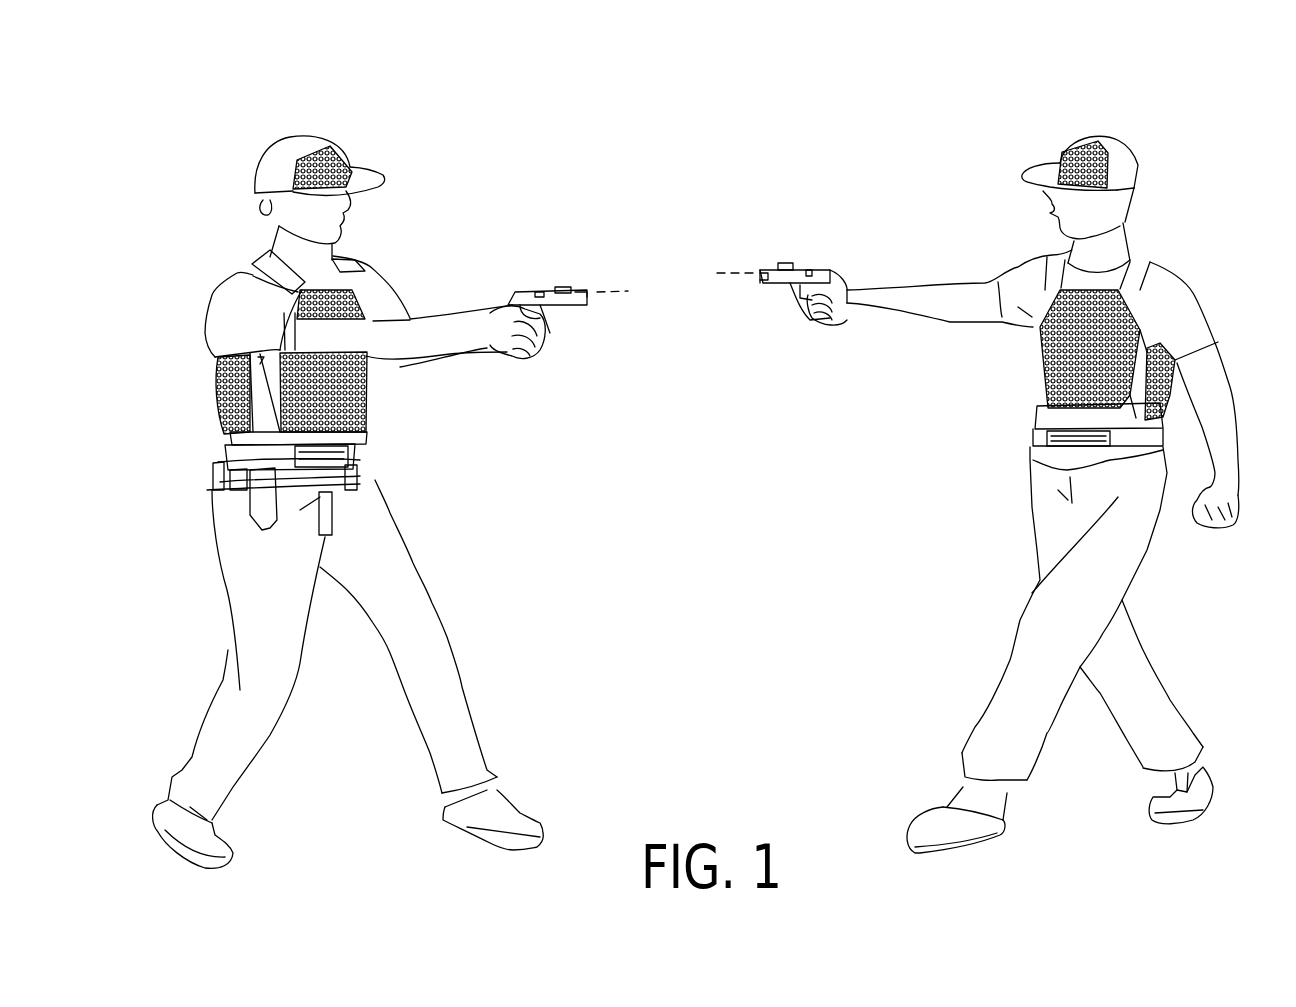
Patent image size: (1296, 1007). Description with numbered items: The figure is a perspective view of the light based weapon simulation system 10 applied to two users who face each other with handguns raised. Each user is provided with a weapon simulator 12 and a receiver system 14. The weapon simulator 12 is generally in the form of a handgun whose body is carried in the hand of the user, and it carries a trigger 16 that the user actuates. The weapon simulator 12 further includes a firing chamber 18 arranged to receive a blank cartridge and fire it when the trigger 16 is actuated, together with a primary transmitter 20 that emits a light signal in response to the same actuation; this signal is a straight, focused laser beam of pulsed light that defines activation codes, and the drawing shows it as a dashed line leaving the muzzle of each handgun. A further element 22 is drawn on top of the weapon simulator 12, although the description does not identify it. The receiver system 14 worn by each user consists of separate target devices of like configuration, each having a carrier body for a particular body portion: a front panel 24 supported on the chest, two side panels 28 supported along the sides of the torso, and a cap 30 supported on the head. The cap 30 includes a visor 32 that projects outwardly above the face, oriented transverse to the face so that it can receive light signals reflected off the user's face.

The light based weapon simulation system 10 is at (1110, 63).
The weapon simulator 12 is at (525, 295).
The receiver system 14 is at (382, 151).
The trigger 16 is at (543, 320).
The firing chamber 18 is at (543, 291).
The primary transmitter 20 is at (585, 290).
The transmitter module 22 is at (568, 287).
The front panel 24 is at (365, 393).
The side panels 28 is at (227, 393).
The cap 30 is at (303, 150).
The visor 32 is at (365, 170).